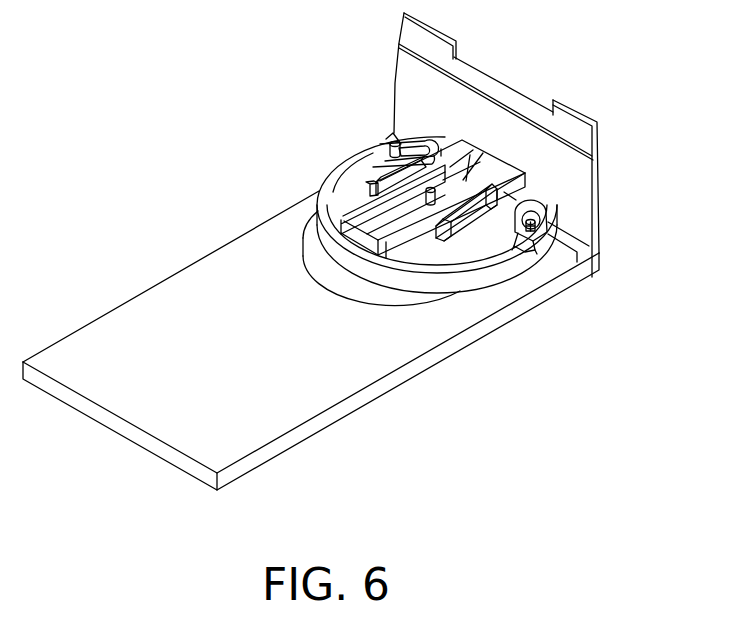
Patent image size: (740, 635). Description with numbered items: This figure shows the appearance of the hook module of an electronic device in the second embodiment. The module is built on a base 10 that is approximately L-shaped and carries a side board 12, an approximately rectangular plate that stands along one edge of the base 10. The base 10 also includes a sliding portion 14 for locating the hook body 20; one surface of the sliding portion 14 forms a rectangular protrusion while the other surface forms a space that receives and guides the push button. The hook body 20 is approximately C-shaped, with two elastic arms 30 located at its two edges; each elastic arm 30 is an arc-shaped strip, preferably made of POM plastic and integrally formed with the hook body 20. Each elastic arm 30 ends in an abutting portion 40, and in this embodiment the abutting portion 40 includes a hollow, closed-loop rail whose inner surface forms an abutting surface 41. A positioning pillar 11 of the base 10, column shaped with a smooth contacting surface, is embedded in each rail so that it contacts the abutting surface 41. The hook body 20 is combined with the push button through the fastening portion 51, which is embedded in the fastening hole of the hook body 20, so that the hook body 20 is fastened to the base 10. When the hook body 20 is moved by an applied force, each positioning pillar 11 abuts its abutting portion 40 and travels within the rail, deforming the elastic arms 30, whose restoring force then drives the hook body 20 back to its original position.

The base 10 is at (119, 282).
The positioning pillar 11 is at (393, 133).
The side board 12 is at (578, 107).
The sliding portion 14 is at (343, 267).
The hook body 20 is at (367, 247).
The elastic arm 30 is at (482, 267).
The abutting portion 40 is at (545, 240).
The abutting surface 41 is at (387, 153).
The fastening portion 51 is at (440, 230).